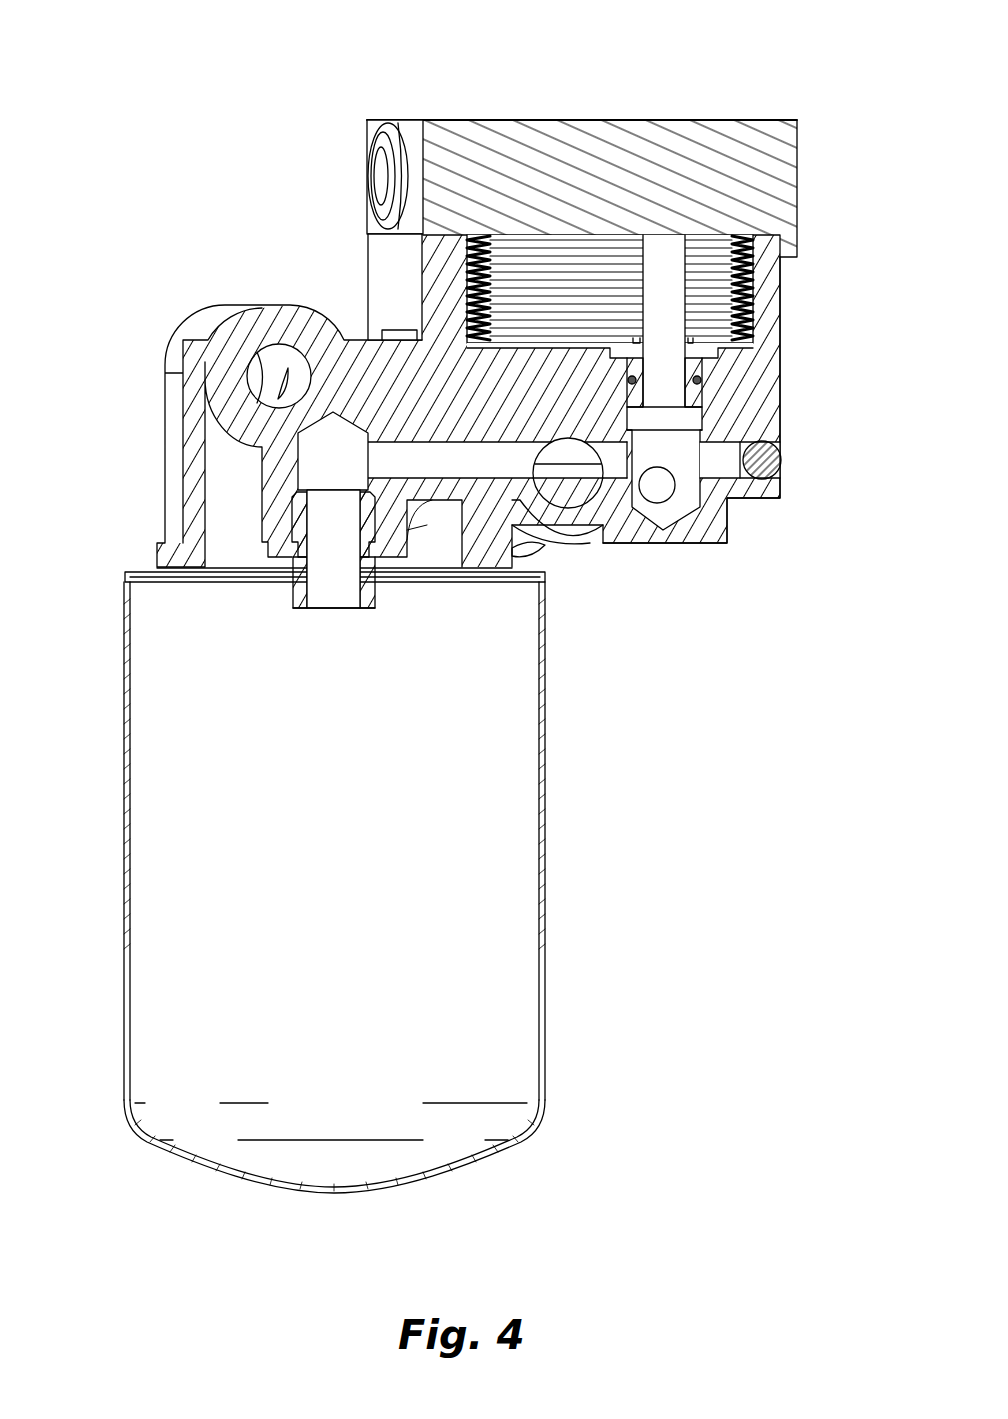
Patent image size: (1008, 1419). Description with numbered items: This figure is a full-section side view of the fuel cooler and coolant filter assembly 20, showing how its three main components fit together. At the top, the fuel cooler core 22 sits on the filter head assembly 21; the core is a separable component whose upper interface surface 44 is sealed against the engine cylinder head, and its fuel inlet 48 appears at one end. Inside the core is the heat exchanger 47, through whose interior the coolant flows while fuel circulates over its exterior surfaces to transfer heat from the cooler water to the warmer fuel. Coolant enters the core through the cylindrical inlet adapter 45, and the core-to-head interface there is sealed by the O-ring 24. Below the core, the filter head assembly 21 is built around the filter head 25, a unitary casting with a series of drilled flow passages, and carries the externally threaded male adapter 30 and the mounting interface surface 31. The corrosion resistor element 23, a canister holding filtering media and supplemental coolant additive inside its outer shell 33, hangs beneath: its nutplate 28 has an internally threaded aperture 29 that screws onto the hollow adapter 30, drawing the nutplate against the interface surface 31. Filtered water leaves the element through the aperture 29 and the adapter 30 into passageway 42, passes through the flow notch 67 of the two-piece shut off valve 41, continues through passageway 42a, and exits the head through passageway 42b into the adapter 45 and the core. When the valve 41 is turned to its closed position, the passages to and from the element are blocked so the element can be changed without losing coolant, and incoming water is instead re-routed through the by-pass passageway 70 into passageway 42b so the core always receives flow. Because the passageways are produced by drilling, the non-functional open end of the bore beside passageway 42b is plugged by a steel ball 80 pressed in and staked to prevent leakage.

The fuel cooler and coolant filter assembly 20 is at (841, 97).
The filter head assembly 21 is at (272, 328).
The fuel cooler core 22 is at (773, 183).
The corrosion resistor element 23 is at (452, 772).
The O-ring 24 is at (707, 367).
The filter head 25 is at (755, 432).
The nutplate 28 is at (157, 563).
The internally threaded aperture 29 is at (377, 592).
The externally threaded male adapter 30 is at (333, 577).
The mounting interface surface 31 is at (483, 572).
The outer shell 33 is at (540, 930).
The shut off valve 41 is at (572, 510).
The passageway 42 is at (397, 453).
The passageway 42a is at (623, 455).
The passageway 42b is at (688, 420).
The interface surface 44 is at (612, 118).
The cylindrical inlet adapter 45 is at (707, 388).
The heat exchanger 47 is at (700, 290).
The fuel inlet 48 is at (382, 171).
The flow notch 67 is at (562, 450).
The by-pass passageway 70 is at (657, 485).
The steel ball 80 is at (765, 462).